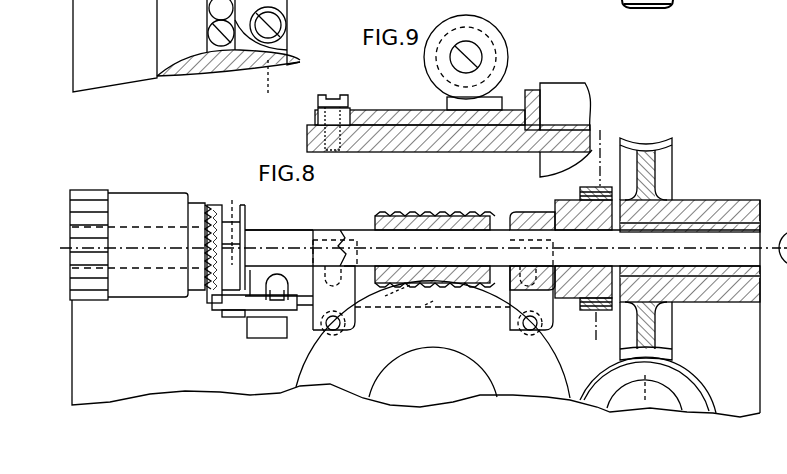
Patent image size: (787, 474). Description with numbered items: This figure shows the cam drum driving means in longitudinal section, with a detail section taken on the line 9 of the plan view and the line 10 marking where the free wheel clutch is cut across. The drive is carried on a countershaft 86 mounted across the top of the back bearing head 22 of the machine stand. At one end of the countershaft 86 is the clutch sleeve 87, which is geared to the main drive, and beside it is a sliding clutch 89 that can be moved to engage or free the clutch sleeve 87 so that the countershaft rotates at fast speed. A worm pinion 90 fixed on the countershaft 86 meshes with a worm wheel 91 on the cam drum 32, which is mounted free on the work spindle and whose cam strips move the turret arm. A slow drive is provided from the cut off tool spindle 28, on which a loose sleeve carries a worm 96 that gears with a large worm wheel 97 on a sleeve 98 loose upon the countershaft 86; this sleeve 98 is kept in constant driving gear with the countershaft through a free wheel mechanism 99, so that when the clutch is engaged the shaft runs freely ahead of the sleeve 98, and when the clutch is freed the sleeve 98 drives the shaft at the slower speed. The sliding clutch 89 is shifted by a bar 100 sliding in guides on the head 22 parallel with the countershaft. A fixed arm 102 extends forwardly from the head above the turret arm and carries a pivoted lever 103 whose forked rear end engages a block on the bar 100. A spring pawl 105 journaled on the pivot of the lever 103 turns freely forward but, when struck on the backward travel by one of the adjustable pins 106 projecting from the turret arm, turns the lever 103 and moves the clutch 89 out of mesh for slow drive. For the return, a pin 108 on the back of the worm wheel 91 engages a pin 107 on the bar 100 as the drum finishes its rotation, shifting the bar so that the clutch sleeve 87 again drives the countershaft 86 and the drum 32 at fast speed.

In FIG. 9, the section line 9 is at (266, 87).
In FIG. 8, the section line 10 is at (597, 236).
In FIG. 9, the bearing head 22 is at (580, 108).
In FIG. 8, the cut off tool spindle 28 is at (650, 398).
In FIG. 8, the cam drum 32 is at (433, 339).
In FIG. 9, the countershaft 86 is at (451, 60).
In FIG. 8, the countershaft 86 is at (504, 306).
In FIG. 8, the clutch sleeve 87 is at (175, 248).
In FIG. 8, the sliding clutch 89 is at (226, 242).
In FIG. 9, the worm pinion 90 is at (495, 38).
In FIG. 8, the worm pinion 90 is at (435, 236).
In FIG. 8, the worm wheel 91 is at (416, 362).
In FIG. 8, the worm 96 is at (712, 407).
In FIG. 8, the worm wheel 97 is at (666, 146).
In FIG. 8, the sleeve 98 is at (752, 186).
In FIG. 8, the free wheel mechanism 99 is at (561, 242).
In FIG. 8, the bar 100 is at (399, 268).
In FIG. 9, the fixed arm 102 is at (455, 147).
In FIG. 8, the fixed arm 102 is at (254, 316).
In FIG. 9, the lever 103 is at (420, 116).
In FIG. 8, the lever 103 is at (245, 320).
In FIG. 9, the spring pawl 105 is at (190, 24).
In FIG. 9, the pins 106 is at (186, 57).
In FIG. 8, the pin 107 is at (394, 297).
In FIG. 8, the pin 108 is at (448, 315).